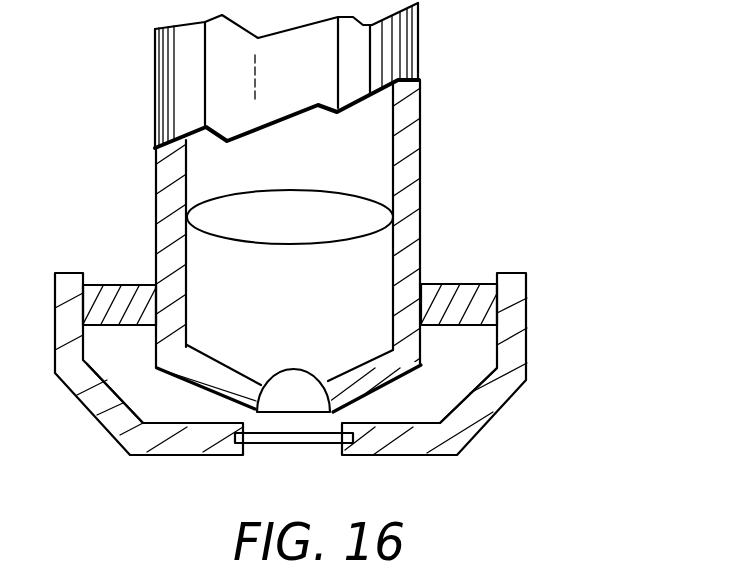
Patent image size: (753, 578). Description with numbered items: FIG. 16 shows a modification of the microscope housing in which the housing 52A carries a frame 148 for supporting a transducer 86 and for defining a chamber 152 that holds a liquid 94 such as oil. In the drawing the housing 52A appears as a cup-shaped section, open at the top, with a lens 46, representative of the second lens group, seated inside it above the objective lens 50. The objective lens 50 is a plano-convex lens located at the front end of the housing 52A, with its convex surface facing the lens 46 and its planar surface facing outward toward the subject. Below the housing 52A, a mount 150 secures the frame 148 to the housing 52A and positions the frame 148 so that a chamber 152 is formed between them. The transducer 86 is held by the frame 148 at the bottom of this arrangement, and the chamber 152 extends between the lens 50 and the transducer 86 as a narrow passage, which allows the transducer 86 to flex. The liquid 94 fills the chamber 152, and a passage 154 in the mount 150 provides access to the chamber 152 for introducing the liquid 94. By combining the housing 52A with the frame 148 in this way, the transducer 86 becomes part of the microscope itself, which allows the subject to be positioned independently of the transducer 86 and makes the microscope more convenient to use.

The lens 46 is at (292, 189).
The microscope housing 52A is at (421, 178).
The mount 150 is at (123, 285).
The passage 154 is at (475, 322).
The frame 148 is at (527, 313).
The chamber 152 is at (118, 390).
The objective lens 50 is at (316, 310).
The liquid 94 is at (437, 393).
The transducer 86 is at (302, 443).